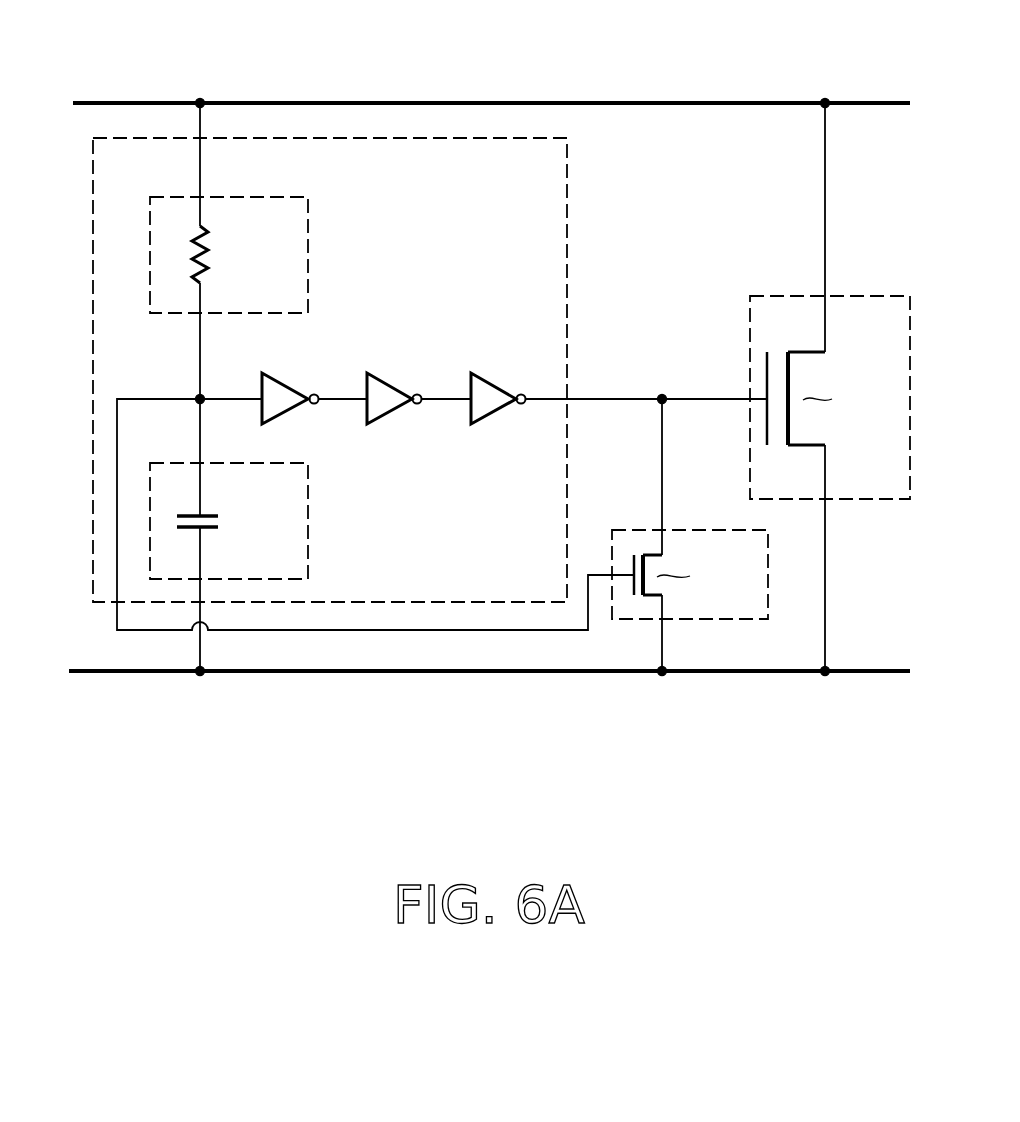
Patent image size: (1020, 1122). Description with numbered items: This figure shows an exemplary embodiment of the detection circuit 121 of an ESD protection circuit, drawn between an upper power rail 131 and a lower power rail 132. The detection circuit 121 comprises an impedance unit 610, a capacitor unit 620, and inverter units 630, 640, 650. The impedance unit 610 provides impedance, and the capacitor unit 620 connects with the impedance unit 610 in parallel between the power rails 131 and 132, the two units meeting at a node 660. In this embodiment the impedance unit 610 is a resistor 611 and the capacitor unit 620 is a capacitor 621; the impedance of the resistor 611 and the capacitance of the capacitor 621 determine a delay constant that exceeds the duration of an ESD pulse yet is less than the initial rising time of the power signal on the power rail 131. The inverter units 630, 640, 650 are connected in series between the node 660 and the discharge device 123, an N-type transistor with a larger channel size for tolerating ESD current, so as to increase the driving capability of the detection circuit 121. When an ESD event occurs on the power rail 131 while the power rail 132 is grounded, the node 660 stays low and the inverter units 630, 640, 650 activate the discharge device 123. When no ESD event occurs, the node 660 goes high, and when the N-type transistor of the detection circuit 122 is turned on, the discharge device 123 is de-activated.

The power rail 131 is at (741, 100).
The power rail 132 is at (743, 675).
The detection circuit 121 is at (567, 170).
The detection circuit 122 is at (713, 528).
The discharge device 123 is at (877, 500).
The impedance unit 610 is at (232, 197).
The resistor 611 is at (210, 254).
The capacitor unit 620 is at (232, 463).
The capacitor 621 is at (218, 521).
The inverter unit 630 is at (286, 383).
The inverter unit 640 is at (392, 383).
The inverter unit 650 is at (496, 383).
The node 660 is at (200, 399).